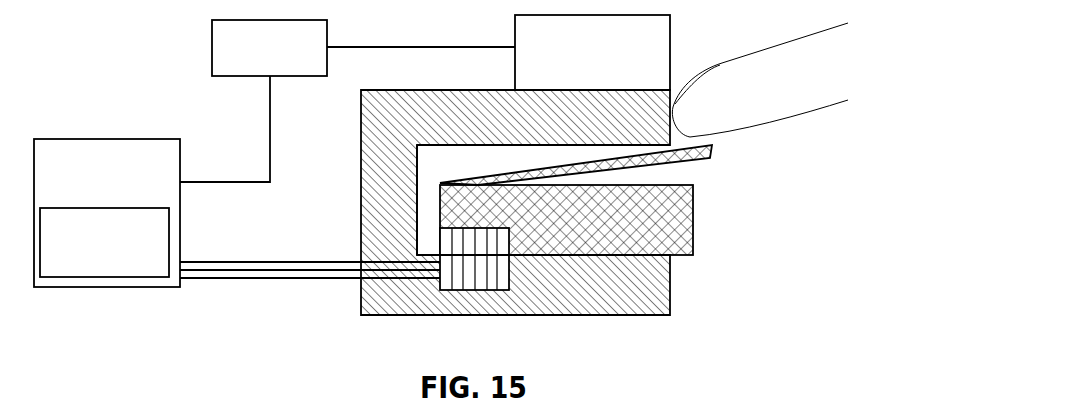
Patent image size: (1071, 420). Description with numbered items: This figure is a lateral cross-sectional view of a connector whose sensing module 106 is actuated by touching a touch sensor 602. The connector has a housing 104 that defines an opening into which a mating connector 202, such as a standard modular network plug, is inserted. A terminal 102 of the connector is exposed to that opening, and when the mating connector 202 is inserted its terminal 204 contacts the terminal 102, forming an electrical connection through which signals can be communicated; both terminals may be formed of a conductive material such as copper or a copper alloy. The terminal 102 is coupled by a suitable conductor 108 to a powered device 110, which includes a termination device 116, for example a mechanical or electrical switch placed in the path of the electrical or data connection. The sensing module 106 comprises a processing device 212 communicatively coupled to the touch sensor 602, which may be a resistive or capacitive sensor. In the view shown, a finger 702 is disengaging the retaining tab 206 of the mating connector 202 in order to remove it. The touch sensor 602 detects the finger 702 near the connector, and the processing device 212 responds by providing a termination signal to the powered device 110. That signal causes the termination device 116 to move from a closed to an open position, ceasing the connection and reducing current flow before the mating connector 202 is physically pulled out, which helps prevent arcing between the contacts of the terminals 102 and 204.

The terminal 102 is at (455, 293).
The housing 104 is at (490, 134).
The sensing module 106 is at (205, 0).
The conductor 108 is at (297, 255).
The powered device 110 is at (107, 213).
The termination device 116 is at (104, 242).
The mating connector 202 is at (696, 207).
The terminal 204 is at (431, 238).
The retaining tab 206 is at (722, 159).
The processing device 212 is at (269, 48).
The touch sensor 602 is at (592, 52).
The finger 702 is at (742, 50).